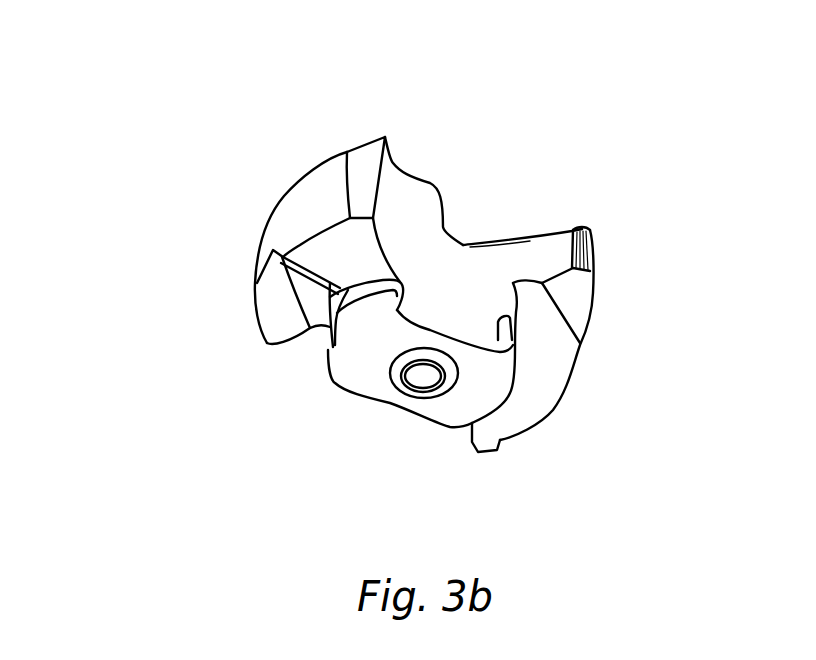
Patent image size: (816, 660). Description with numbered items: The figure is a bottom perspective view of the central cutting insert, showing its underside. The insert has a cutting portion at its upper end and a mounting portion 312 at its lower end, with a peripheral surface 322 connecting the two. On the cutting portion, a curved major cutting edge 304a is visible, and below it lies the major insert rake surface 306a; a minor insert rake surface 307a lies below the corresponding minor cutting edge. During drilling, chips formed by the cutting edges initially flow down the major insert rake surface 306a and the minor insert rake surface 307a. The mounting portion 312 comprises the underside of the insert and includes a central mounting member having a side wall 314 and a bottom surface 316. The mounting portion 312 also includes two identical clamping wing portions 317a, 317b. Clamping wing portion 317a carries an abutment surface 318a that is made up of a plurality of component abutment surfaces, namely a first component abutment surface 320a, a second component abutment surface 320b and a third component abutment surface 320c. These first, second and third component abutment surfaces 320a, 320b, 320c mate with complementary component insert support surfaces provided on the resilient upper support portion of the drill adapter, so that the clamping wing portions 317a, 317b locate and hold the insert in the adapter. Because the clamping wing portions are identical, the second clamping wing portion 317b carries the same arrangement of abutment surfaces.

The peripheral surface 322 is at (323, 193).
The clamping wing portion 317a is at (284, 197).
The major cutting edge 304a is at (415, 170).
The major insert rake surface 306a is at (433, 253).
The minor insert rake surface 307a is at (553, 255).
The clamping wing portion 317b is at (573, 390).
The abutment surface 318a is at (143, 170).
The third component abutment surface 320c is at (327, 252).
The second component abutment surface 320b is at (292, 286).
The first component abutment surface 320a is at (270, 322).
The side wall 314 is at (328, 348).
The bottom surface 316 is at (382, 377).
The mounting portion 312 is at (432, 435).